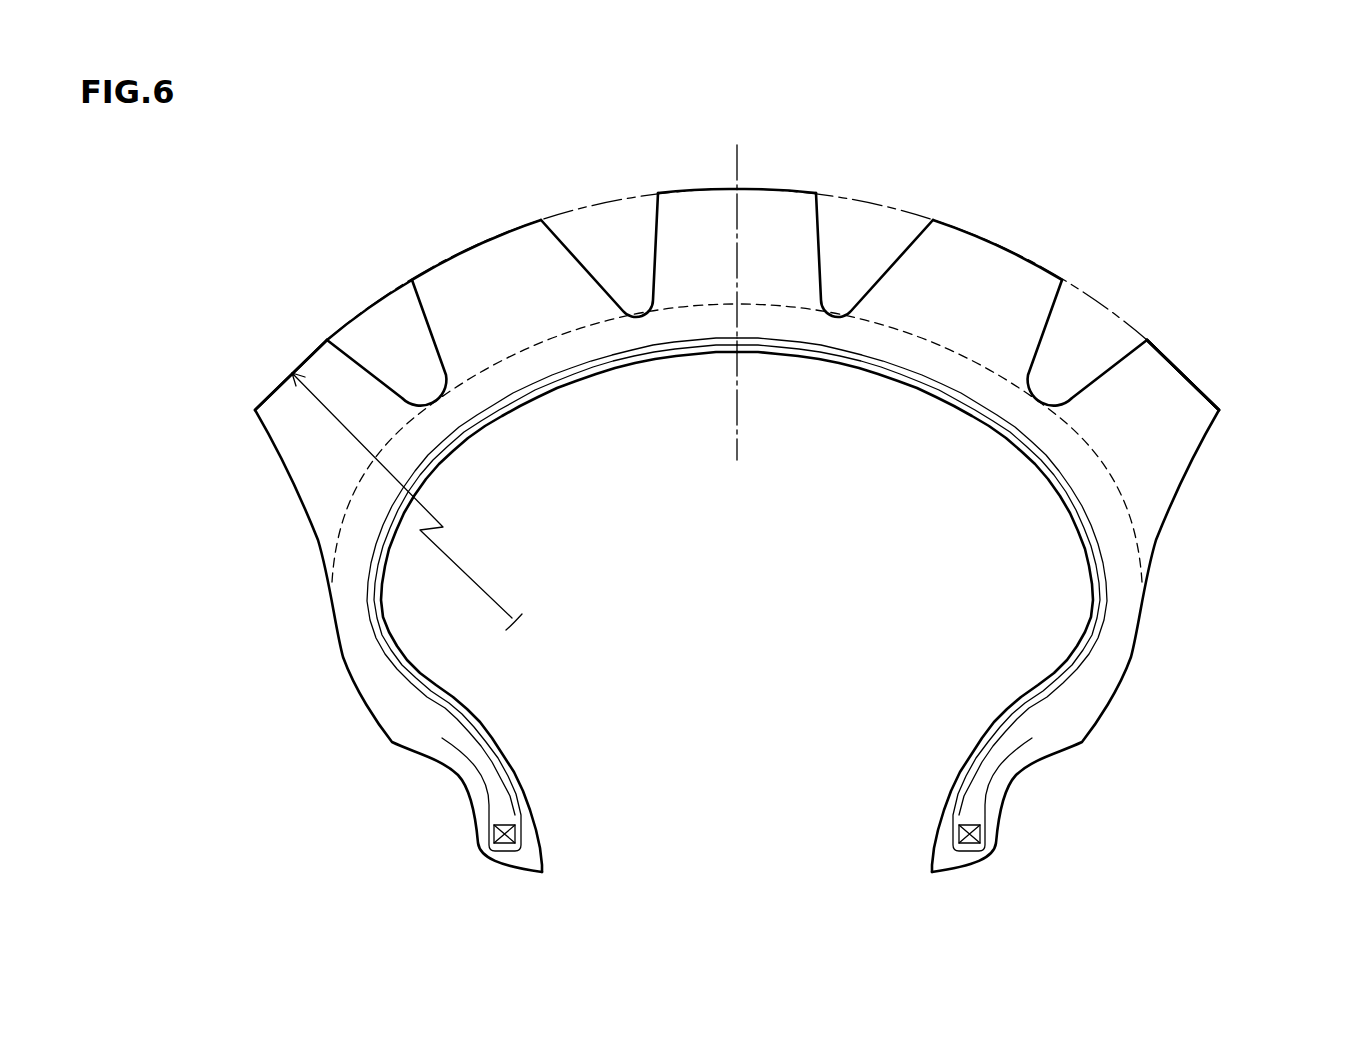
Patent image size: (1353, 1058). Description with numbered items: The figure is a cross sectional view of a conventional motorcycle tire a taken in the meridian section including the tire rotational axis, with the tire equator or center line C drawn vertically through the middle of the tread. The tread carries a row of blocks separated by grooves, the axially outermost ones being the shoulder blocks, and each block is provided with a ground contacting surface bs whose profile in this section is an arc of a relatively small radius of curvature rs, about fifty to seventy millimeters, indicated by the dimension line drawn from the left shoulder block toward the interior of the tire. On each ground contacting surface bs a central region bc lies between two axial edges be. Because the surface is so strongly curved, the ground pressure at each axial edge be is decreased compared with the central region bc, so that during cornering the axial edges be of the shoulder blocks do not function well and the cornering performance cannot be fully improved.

The motorcycle tire a is at (1107, 220).
The tire equator / center line C is at (737, 288).
The ground contacting surface bs is at (308, 357).
The central region bc is at (1190, 373).
The axial edge be is at (1150, 340).
The radius of curvature rs is at (482, 588).